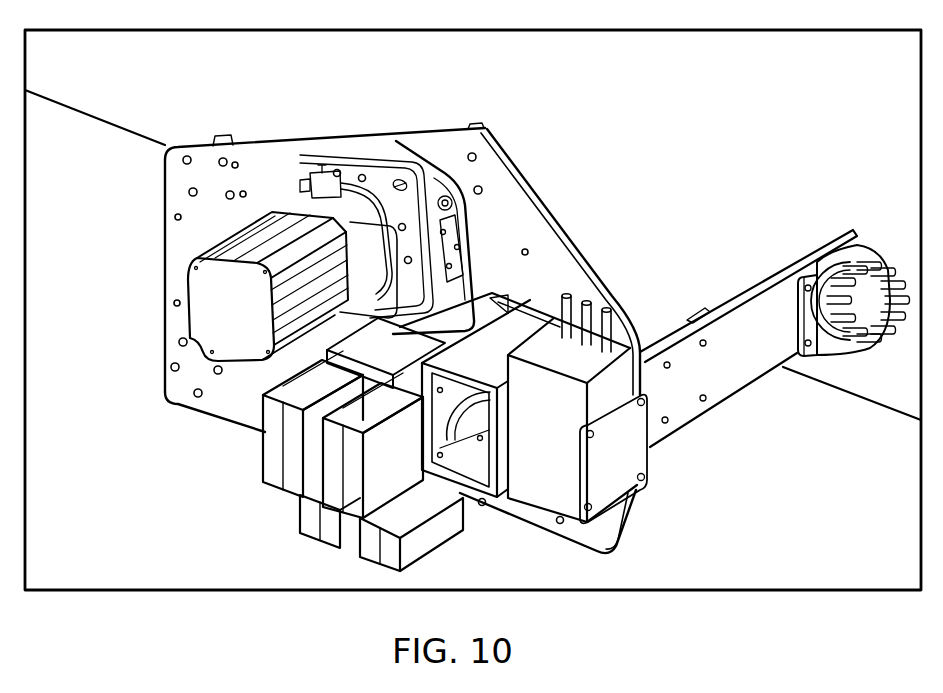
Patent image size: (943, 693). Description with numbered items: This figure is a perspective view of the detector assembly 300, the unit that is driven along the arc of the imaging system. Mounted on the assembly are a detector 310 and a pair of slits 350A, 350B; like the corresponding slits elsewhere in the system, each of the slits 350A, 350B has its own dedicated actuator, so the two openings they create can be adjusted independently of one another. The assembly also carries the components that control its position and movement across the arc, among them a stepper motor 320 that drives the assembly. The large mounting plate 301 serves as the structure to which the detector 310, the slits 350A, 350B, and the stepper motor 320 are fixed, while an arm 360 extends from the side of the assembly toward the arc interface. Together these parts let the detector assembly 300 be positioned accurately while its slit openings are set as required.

The detector assembly 300 is at (473, 310).
The mounting plate 301 is at (256, 166).
The detector 310 is at (564, 434).
The stepper motor 320 is at (249, 318).
The slit 350A is at (277, 448).
The slit 350B is at (338, 495).
The arm with connector 360 is at (779, 359).